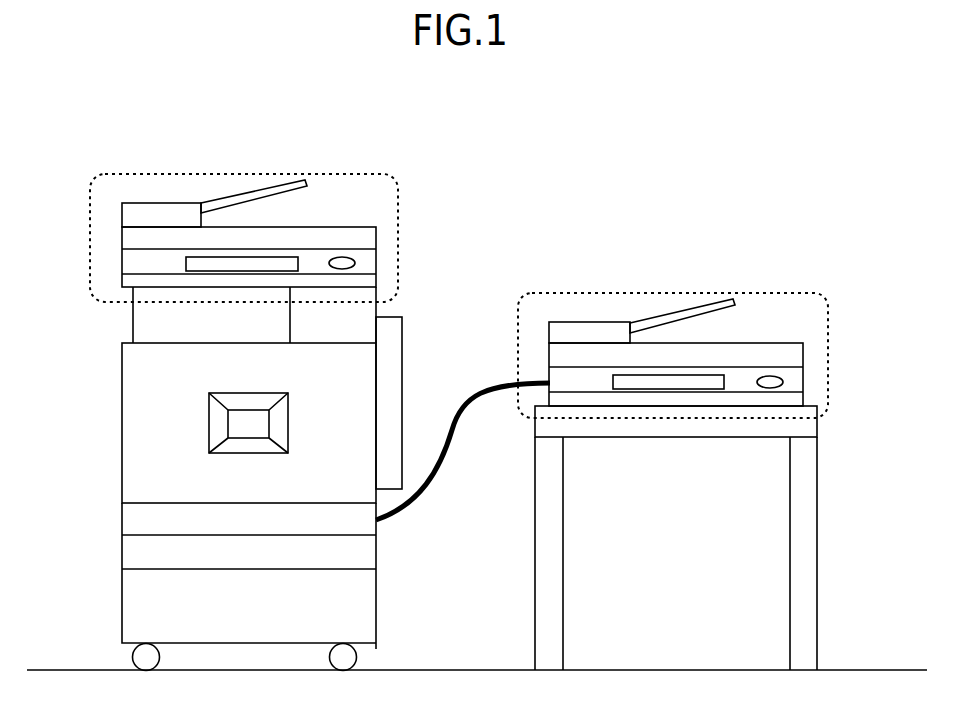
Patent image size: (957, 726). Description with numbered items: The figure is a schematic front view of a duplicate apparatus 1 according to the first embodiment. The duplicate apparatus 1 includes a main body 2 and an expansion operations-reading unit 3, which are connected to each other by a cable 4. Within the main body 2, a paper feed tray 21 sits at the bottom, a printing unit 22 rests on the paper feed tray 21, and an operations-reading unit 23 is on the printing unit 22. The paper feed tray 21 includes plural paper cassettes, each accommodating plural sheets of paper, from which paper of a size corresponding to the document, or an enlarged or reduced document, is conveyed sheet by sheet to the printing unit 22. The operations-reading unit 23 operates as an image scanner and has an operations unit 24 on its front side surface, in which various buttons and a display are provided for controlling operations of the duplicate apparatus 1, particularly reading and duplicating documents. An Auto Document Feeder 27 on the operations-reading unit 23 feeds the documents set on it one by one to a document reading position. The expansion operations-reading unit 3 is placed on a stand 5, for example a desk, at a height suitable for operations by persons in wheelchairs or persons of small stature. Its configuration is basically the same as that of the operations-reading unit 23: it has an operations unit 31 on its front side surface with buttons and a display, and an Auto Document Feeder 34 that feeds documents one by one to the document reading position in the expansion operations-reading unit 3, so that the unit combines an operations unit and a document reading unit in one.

The duplicate apparatus 1 is at (625, 172).
The main body 2 is at (95, 392).
The expansion operations-reading unit 3 is at (828, 333).
The cable 4 is at (452, 422).
The stand 5 is at (817, 423).
The paper feed tray 21 is at (122, 592).
The printing unit 22 is at (122, 457).
The operations-reading unit 23 is at (90, 220).
The operations unit 24 is at (186, 265).
The Auto Document Feeder (ADF) 27 is at (122, 215).
The operations unit 31 is at (613, 382).
The Auto Document Feeder (ADF) 34 is at (549, 322).